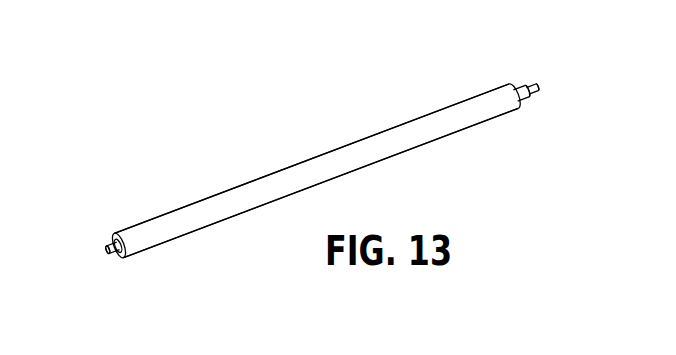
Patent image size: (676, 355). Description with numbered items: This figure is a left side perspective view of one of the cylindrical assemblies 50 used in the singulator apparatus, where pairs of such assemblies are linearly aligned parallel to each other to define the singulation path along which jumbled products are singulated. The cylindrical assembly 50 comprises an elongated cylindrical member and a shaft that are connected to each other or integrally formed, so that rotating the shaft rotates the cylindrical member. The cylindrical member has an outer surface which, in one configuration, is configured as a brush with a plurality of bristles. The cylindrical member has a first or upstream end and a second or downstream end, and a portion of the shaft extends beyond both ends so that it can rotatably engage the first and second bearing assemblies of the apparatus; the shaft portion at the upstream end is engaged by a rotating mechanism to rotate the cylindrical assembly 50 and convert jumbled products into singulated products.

The cylindrical assembly 50 is at (322, 157).